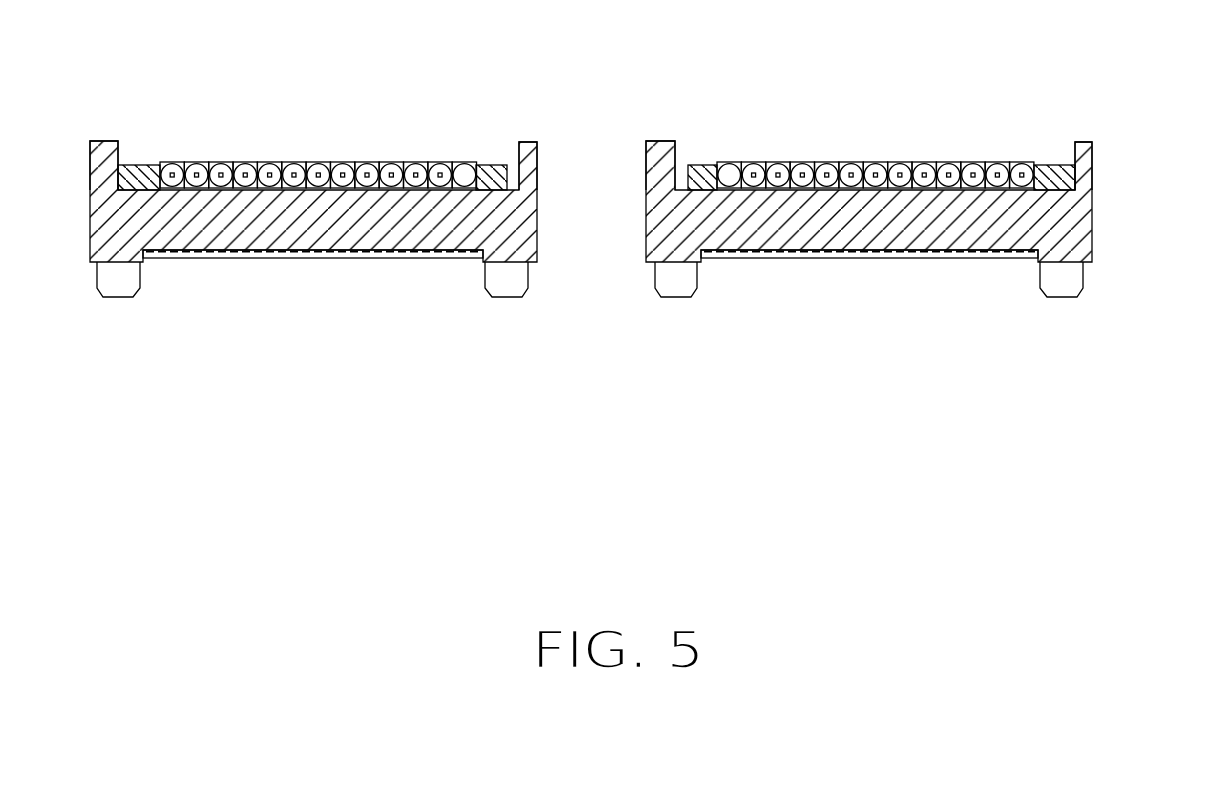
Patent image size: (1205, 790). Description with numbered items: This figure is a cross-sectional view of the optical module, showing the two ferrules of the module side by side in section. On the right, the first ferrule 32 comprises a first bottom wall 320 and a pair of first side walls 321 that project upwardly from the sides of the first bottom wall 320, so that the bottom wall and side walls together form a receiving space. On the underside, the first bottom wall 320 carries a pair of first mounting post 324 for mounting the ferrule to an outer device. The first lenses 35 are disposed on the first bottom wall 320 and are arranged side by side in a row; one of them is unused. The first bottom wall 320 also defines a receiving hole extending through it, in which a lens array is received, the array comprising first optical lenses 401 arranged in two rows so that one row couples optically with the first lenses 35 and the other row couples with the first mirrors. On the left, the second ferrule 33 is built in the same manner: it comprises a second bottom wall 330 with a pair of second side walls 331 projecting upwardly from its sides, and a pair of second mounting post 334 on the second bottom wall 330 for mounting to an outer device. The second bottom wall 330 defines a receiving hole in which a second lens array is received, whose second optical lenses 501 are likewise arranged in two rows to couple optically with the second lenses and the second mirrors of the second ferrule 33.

The first ferrule 32 is at (654, 148).
The second ferrule 33 is at (105, 148).
The first lenses 35 is at (727, 172).
The first bottom wall 320 is at (978, 225).
The first side walls 321 is at (1085, 185).
The first mounting post 324 is at (1065, 277).
The second bottom wall 330 is at (302, 242).
The second side walls 331 is at (530, 167).
The second mounting post 334 is at (505, 278).
The first optical lenses 401 is at (862, 250).
The second optical lenses 501 is at (355, 253).